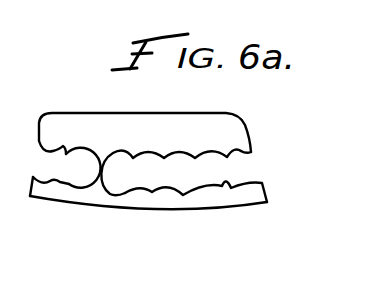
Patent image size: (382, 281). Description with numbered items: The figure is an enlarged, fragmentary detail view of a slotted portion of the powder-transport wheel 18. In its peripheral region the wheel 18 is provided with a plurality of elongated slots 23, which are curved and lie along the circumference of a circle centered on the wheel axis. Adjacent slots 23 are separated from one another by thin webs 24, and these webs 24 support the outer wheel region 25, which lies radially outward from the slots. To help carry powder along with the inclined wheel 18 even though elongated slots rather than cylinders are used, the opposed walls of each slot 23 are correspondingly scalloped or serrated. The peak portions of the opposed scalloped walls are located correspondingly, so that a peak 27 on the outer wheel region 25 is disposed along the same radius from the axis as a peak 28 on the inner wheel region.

The powder-transport wheel 18 is at (229, 124).
The elongated slots 23 is at (150, 172).
The thin webs 24 is at (96, 186).
The outer wheel region 25 is at (177, 203).
The peak of the outer wheel region 27 is at (225, 184).
The peak of the inner wheel region 28 is at (243, 158).